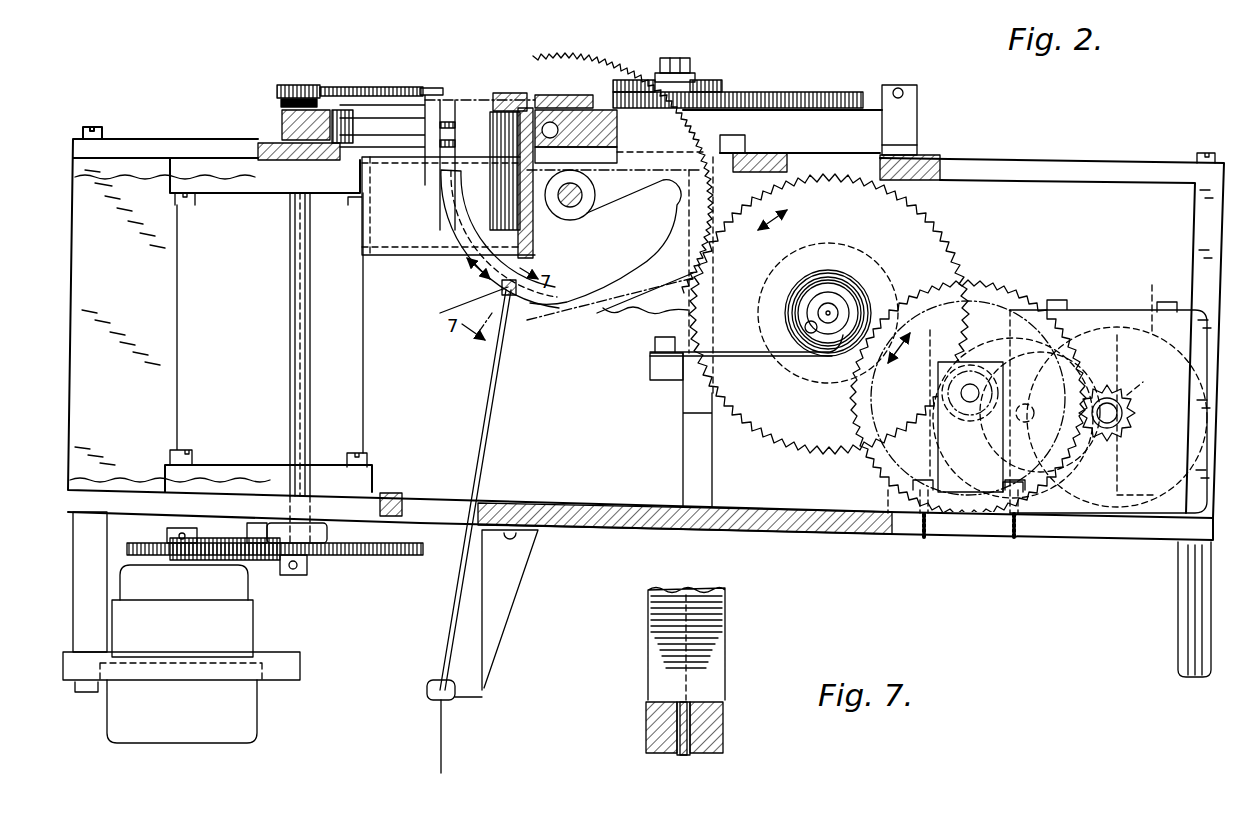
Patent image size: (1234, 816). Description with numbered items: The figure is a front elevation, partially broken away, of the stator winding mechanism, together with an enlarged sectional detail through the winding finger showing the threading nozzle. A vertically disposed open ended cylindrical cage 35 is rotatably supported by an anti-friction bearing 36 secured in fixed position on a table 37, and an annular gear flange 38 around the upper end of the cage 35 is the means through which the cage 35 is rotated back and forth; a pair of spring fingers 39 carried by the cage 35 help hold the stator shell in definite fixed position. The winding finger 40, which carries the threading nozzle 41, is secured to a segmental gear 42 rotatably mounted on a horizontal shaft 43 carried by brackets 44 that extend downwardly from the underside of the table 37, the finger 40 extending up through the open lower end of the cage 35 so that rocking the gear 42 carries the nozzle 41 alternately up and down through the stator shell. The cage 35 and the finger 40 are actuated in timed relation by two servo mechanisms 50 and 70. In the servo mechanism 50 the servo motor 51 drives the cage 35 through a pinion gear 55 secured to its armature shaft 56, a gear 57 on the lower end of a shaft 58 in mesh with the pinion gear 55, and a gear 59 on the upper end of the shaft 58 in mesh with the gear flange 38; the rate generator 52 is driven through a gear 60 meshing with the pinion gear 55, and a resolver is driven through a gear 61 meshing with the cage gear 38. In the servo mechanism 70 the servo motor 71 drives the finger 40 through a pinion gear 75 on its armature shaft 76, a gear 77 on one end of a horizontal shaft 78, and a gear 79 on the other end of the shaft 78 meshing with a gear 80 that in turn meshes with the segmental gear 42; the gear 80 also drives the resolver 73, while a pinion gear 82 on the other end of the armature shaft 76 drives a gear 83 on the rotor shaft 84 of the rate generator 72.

In FIG. 2, the cylindrical cage 35 is at (382, 206).
In FIG. 2, the anti-friction bearing 36 is at (533, 105).
In FIG. 2, the table 37 is at (146, 136).
In FIG. 2, the annular gear flange 38 is at (400, 87).
In FIG. 2, the spring fingers 39 is at (450, 108).
In FIG. 2, the winding finger 40 is at (460, 272).
In FIG. 7, the winding finger 40 is at (715, 652).
In FIG. 2, the threading nozzle 41 is at (524, 300).
In FIG. 7, the threading nozzle 41 is at (695, 720).
In FIG. 2, the segmental gear 42 is at (693, 210).
In FIG. 2, the horizontal shaft 43 is at (569, 208).
In FIG. 2, the brackets 44 is at (536, 352).
In FIG. 2, the servo mechanism 50 is at (166, 377).
In FIG. 2, the servo motor 51 is at (355, 405).
In FIG. 2, the rate generator 52 is at (245, 628).
In FIG. 2, the pinion gear 55 is at (247, 538).
In FIG. 2, the armature shaft 56 is at (267, 565).
In FIG. 2, the gear 57 is at (362, 560).
In FIG. 2, the shaft 58 is at (292, 330).
In FIG. 2, the gear 59 is at (288, 88).
In FIG. 2, the gear 60 is at (148, 540).
In FIG. 2, the gear 61 is at (590, 93).
In FIG. 2, the servo mechanism 70 is at (1026, 277).
In FIG. 2, the servo motor 71 is at (1152, 330).
In FIG. 2, the rate generator 72 is at (980, 332).
In FIG. 2, the resolver 73 is at (848, 243).
In FIG. 2, the pinion gear 75 is at (1136, 412).
In FIG. 2, the armature shaft 76 is at (1112, 420).
In FIG. 2, the gear 77 is at (853, 410).
In FIG. 2, the horizontal shaft 78 is at (963, 393).
In FIG. 2, the gear 79 is at (1005, 420).
In FIG. 2, the gear 80 is at (943, 223).
In FIG. 2, the pinion gear 82 is at (1130, 392).
In FIG. 2, the gear 83 is at (925, 470).
In FIG. 2, the rotor shaft 84 is at (1030, 428).